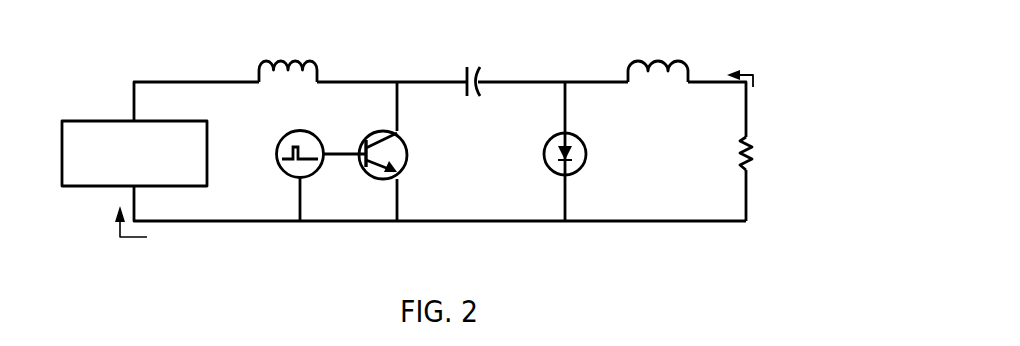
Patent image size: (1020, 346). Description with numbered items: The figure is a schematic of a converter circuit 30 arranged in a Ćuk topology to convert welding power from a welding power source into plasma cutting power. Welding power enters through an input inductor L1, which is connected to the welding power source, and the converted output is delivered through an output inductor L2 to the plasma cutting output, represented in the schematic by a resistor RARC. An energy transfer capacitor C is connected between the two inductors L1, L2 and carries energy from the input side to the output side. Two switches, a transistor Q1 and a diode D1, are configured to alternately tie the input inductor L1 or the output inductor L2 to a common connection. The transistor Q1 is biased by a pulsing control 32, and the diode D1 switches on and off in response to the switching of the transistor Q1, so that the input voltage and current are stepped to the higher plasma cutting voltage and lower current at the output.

The converter circuit 30 is at (824, 101).
The pulsing control 32 is at (277, 152).
The input inductor L1 is at (288, 82).
The output inductor L2 is at (658, 81).
The energy transfer capacitor C is at (473, 96).
The plasma cutting output RARC is at (765, 153).
The transistor Q1 is at (379, 155).
The diode D1 is at (580, 154).